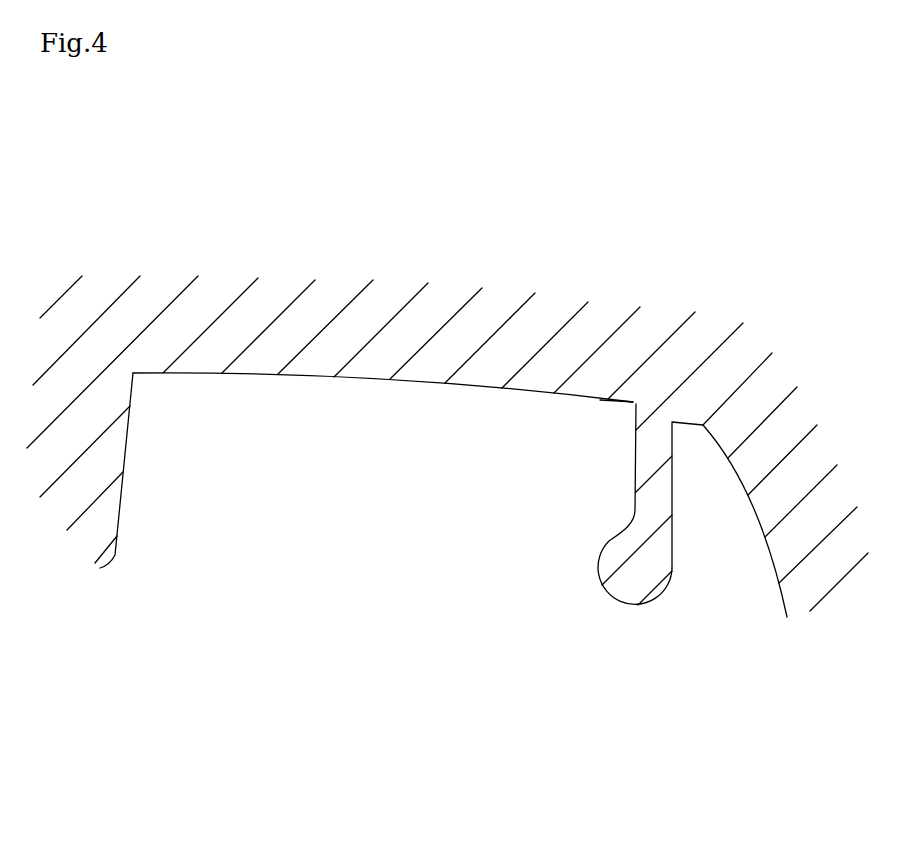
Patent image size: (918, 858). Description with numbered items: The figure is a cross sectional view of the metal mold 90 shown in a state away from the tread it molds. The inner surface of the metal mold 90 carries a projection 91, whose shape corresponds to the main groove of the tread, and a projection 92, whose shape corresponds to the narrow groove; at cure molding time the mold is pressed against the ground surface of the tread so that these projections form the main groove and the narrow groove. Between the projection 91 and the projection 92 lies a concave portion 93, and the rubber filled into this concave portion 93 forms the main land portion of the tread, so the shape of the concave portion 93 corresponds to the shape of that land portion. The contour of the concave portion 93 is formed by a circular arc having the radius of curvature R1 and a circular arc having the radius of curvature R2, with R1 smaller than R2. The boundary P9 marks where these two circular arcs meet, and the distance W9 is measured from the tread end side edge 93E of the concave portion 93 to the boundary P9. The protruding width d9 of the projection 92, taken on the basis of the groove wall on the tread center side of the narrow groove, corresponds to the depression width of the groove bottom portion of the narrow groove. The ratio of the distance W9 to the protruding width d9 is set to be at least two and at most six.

The metal mold 90 is at (307, 341).
The projection 91 is at (115, 556).
The projection 92 is at (675, 568).
The concave portion 93 is at (357, 378).
The tread end side edge 93E is at (633, 404).
The boundary P9 is at (420, 232).
The distance W9 is at (636, 404).
The radius of curvature R1 is at (267, 375).
The radius of curvature R2 is at (510, 390).
The protruding width d9 is at (597, 582).